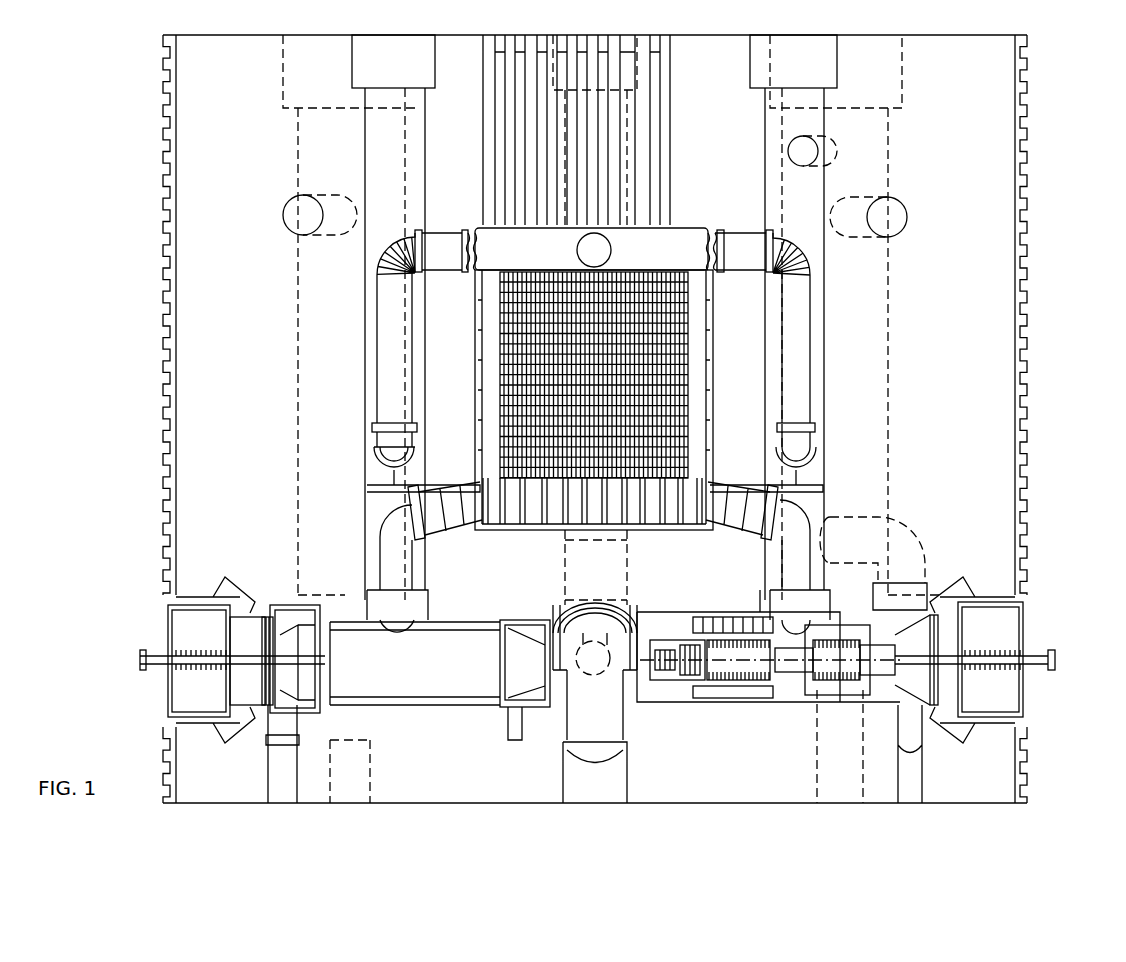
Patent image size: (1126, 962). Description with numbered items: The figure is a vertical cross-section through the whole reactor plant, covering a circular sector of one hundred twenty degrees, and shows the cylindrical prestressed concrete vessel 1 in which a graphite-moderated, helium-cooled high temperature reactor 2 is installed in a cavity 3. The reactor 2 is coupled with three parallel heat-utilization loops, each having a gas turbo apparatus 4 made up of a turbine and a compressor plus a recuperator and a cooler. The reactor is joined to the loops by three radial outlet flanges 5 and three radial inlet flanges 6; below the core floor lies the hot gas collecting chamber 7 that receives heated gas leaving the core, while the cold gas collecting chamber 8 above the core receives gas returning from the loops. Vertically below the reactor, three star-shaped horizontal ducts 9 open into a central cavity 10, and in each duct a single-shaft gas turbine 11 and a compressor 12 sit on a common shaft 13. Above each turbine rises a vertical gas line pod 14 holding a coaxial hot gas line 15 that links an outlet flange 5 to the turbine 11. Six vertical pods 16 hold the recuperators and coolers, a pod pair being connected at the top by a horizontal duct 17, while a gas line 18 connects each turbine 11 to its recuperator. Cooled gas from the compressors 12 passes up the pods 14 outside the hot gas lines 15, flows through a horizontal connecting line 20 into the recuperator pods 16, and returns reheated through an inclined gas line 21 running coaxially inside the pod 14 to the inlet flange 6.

The prestressed concrete vessel 1 is at (975, 122).
The high temperature reactor 2 is at (676, 368).
The cavity 3 is at (697, 315).
The gas turbo apparatus 4 is at (788, 650).
The radial outlet flanges 5 is at (457, 508).
The radial inlet flanges 6 is at (448, 245).
The hot gas collecting chamber 7 is at (663, 495).
The cold gas collecting chamber 8 is at (668, 248).
The horizontal ducts 9 is at (468, 705).
The cavity 10 is at (607, 692).
The single-shaft gas turbine 11 is at (855, 660).
The compressor 12 is at (525, 683).
The common shaft 13 is at (985, 650).
The vertical gas line pod 14 is at (371, 385).
The hot gas lines 15 is at (385, 568).
The vertical pods 16 is at (320, 465).
The horizontal duct 17 is at (303, 222).
The gas line 18 is at (907, 548).
The horizontal connecting line 20 is at (797, 150).
The gas line 21 is at (383, 335).